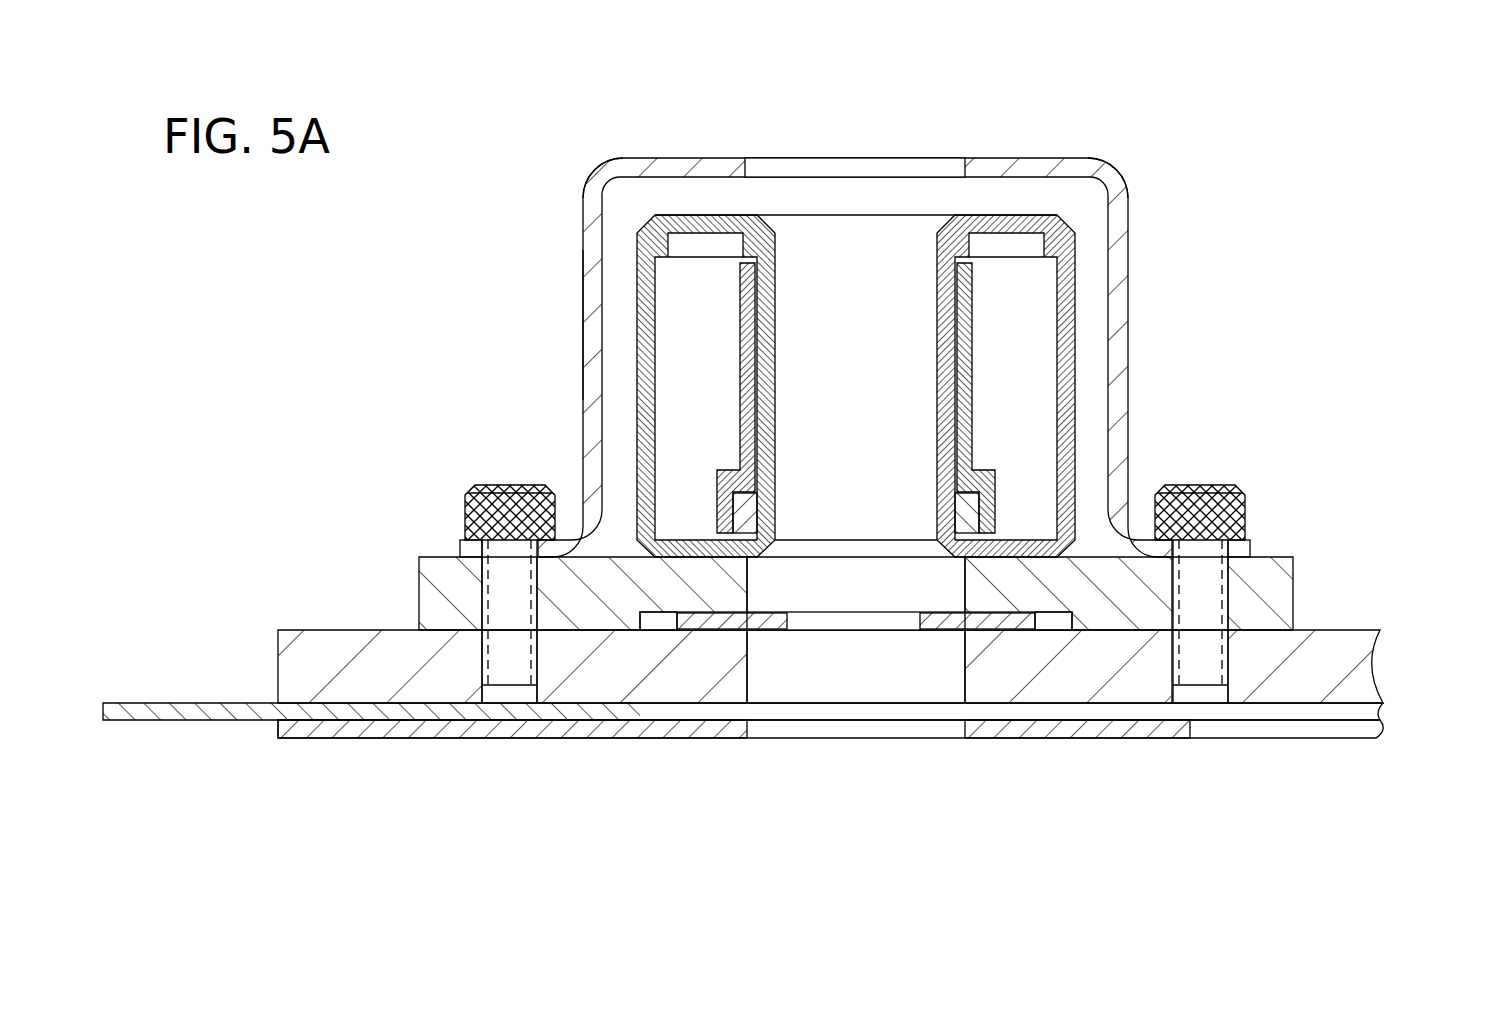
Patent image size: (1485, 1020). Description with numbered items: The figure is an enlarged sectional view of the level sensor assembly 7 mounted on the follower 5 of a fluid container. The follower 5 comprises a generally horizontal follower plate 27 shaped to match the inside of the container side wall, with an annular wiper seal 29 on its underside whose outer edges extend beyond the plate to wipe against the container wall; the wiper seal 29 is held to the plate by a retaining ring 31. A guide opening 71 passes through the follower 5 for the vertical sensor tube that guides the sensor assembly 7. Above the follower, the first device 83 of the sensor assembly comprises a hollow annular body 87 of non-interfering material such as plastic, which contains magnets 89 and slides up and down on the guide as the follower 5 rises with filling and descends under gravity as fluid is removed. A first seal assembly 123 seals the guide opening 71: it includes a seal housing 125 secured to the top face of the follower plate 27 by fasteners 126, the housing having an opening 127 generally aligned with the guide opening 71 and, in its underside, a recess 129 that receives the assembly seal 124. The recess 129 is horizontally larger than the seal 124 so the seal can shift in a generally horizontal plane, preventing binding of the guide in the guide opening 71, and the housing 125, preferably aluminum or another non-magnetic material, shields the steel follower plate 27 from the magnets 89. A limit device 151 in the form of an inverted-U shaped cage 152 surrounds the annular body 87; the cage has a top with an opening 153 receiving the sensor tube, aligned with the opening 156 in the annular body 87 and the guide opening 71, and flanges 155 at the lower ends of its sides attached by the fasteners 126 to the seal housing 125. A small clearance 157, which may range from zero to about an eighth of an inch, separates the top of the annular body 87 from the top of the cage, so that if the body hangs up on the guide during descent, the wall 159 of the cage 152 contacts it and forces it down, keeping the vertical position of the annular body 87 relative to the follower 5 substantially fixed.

The follower 5 is at (316, 512).
The sensor assembly 7 is at (1212, 121).
The follower plate 27 is at (317, 628).
The wiper seal 29 is at (148, 722).
The retaining ring 31 is at (345, 740).
The guide opening 71 is at (870, 664).
The first device 83 is at (1082, 413).
The annular body 87 is at (1076, 340).
The magnets 89 is at (985, 492).
The first seal assembly 123 is at (1305, 612).
The assembly seal 124 is at (755, 630).
The seal housing 125 is at (1097, 640).
The fasteners 126 is at (508, 484).
The opening 127 is at (905, 587).
The recess 129 is at (667, 621).
The limit device 151 is at (579, 196).
The cage 152 is at (583, 287).
The opening 153 is at (852, 163).
The flanges 155 is at (1245, 547).
The opening 156 is at (866, 226).
The clearance 157 is at (1008, 187).
The wall 159 is at (658, 183).